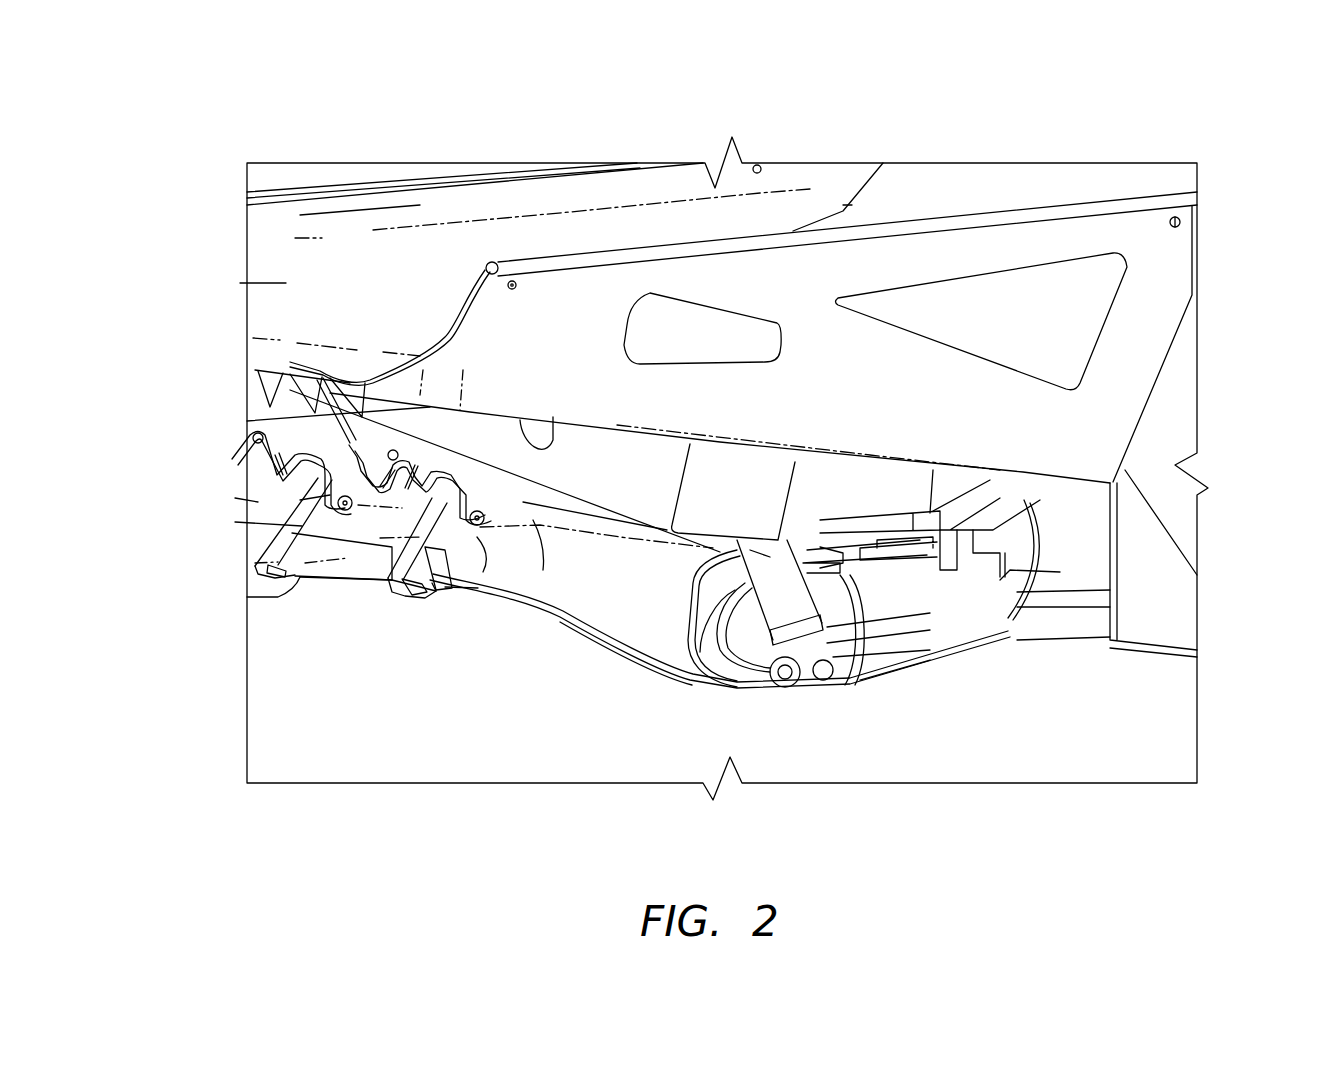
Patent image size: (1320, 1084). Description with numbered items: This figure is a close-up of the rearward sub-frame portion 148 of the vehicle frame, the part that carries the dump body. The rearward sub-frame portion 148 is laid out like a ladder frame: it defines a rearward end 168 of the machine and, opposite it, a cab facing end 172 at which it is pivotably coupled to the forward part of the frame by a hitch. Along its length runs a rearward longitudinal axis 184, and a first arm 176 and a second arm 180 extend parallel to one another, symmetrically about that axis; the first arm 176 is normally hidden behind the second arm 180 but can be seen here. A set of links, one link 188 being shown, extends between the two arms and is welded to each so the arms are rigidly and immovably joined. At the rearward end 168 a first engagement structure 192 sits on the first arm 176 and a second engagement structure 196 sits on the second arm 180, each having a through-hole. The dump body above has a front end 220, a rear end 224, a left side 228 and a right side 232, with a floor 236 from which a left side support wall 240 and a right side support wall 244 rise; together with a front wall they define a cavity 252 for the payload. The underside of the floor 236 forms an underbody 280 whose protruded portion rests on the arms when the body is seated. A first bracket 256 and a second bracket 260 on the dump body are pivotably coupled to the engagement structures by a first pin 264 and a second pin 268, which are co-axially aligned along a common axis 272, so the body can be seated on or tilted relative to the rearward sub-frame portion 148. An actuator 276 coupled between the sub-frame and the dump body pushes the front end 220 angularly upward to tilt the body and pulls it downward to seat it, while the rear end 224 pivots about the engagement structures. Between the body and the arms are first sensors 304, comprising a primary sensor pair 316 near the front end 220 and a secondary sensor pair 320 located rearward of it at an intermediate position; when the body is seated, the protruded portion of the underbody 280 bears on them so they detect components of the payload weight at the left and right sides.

The rearward sub-frame portion 148 is at (612, 650).
The rearward end 168 is at (352, 582).
The cab facing end 172 is at (997, 580).
The first arm 176 is at (295, 580).
The second arm 180 is at (520, 607).
The rearward longitudinal axis 184 is at (270, 568).
The link 188 is at (362, 592).
The first engagement structure 192 is at (327, 493).
The second engagement structure 196 is at (366, 593).
The front end 220 is at (1173, 352).
The rear end 224 is at (290, 284).
The left side 228 is at (340, 181).
The right side 232 is at (884, 304).
The floor 236 is at (320, 358).
The left side support wall 240 is at (293, 190).
The right side support wall 244 is at (473, 297).
The cavity 252 is at (410, 272).
The first bracket 256 is at (345, 440).
The second bracket 260 is at (546, 585).
The first pin 264 is at (320, 520).
The second pin 268 is at (475, 567).
The common axis 272 is at (700, 653).
The actuator 276 is at (757, 683).
The underbody 280 is at (550, 452).
The first sensors 304 is at (930, 523).
The primary sensor pair 316 is at (920, 553).
The secondary sensor pair 320 is at (848, 560).